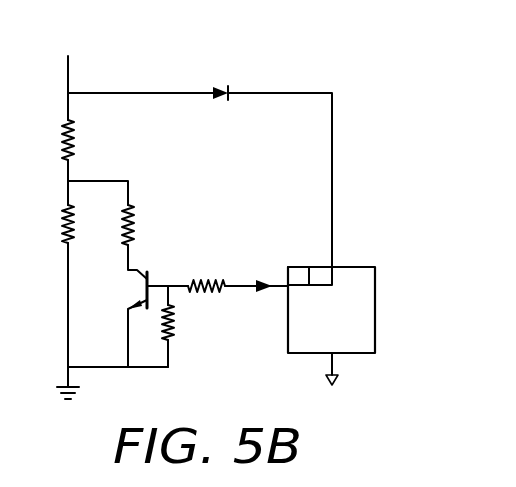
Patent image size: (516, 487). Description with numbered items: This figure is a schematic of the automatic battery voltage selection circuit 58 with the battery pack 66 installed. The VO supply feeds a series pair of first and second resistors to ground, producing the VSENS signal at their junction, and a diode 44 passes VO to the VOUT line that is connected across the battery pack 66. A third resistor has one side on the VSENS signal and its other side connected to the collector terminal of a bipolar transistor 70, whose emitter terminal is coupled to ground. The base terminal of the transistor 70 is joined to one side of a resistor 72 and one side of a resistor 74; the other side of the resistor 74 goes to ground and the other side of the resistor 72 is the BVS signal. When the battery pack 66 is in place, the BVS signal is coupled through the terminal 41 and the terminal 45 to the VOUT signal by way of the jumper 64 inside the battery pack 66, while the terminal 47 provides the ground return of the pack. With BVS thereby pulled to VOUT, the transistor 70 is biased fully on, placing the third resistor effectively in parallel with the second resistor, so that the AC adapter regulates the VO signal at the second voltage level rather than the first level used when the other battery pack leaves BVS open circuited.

The automatic battery voltage selection circuit 58 is at (157, 70).
The diode 44 is at (224, 86).
The bipolar transistor 70 is at (126, 271).
The resister 72 is at (208, 281).
The resister 74 is at (169, 336).
The terminal 41 is at (288, 284).
The jumper 64 is at (308, 266).
The terminal 45 is at (330, 266).
The battery pack 66 is at (360, 267).
The terminal 47 is at (336, 357).